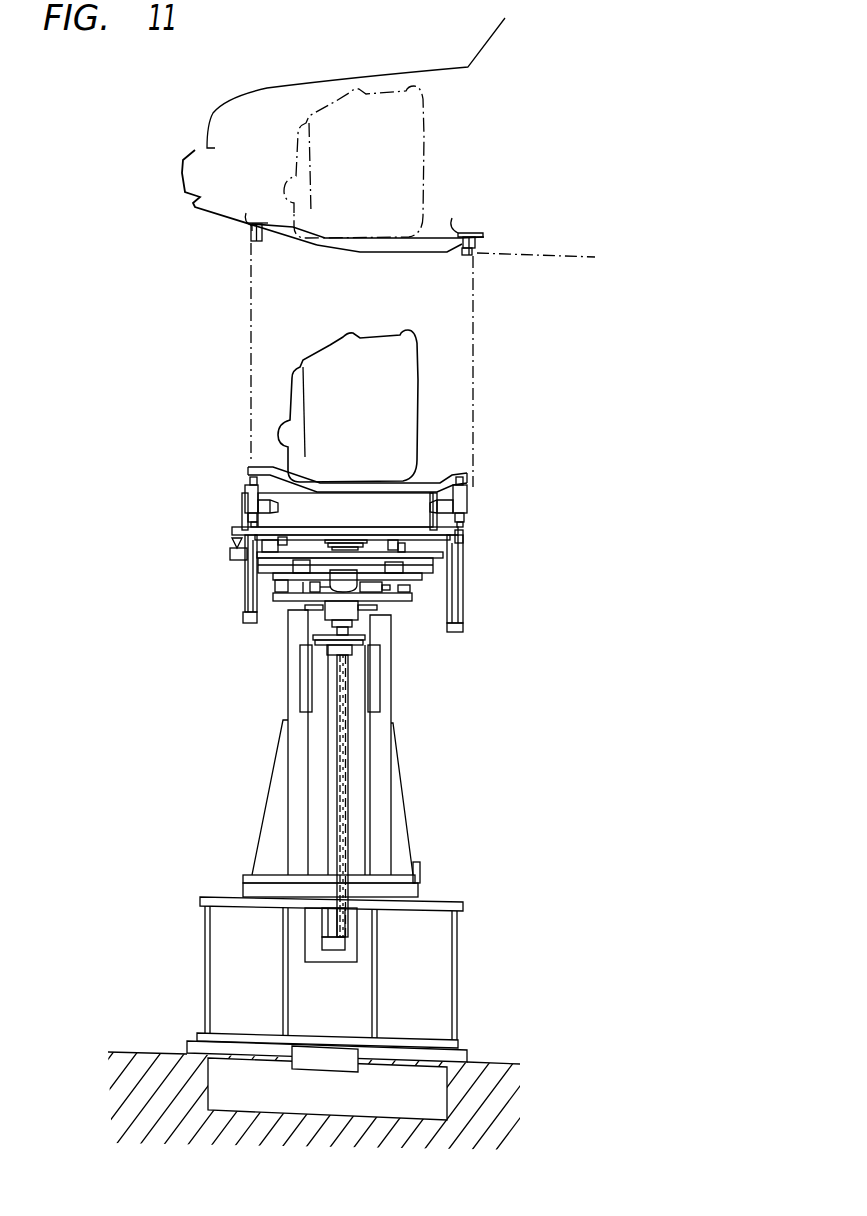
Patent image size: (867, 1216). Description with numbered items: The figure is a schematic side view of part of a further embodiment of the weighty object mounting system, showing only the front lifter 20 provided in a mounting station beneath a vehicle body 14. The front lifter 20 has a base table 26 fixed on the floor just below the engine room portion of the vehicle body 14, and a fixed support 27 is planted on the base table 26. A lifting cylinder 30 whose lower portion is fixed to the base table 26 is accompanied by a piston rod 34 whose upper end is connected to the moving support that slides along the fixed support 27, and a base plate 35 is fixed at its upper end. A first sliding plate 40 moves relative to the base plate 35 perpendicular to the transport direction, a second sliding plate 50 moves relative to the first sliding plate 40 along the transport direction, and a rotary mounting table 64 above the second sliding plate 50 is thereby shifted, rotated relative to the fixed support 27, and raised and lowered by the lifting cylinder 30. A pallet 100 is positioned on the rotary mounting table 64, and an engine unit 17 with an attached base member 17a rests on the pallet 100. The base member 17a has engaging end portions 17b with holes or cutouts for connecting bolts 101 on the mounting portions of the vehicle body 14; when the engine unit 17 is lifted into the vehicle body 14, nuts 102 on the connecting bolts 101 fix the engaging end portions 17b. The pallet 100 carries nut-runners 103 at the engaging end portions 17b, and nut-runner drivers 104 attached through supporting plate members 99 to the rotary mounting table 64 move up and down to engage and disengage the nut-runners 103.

The vehicle body 14 is at (267, 88).
The engine unit 17 is at (420, 155).
The base member 17a is at (357, 246).
The engaging end portions 17b is at (246, 227).
The connecting bolt 101 is at (252, 224).
The nuts 102 is at (264, 242).
The nut-runners 103 is at (248, 502).
The pallet 100 is at (413, 507).
The rotary mounting table 64 is at (235, 530).
The second sliding plate 50 is at (433, 557).
The nut-runner drivers 104 is at (250, 580).
The supporting plate members 99 is at (248, 615).
The first sliding plate 40 is at (420, 578).
The base plate 35 is at (413, 598).
The piston rod 34 is at (327, 627).
The fixed support 27 is at (293, 663).
The front lifter 20 is at (399, 625).
The lifting cylinder 30 is at (333, 750).
The base table 26 is at (437, 902).